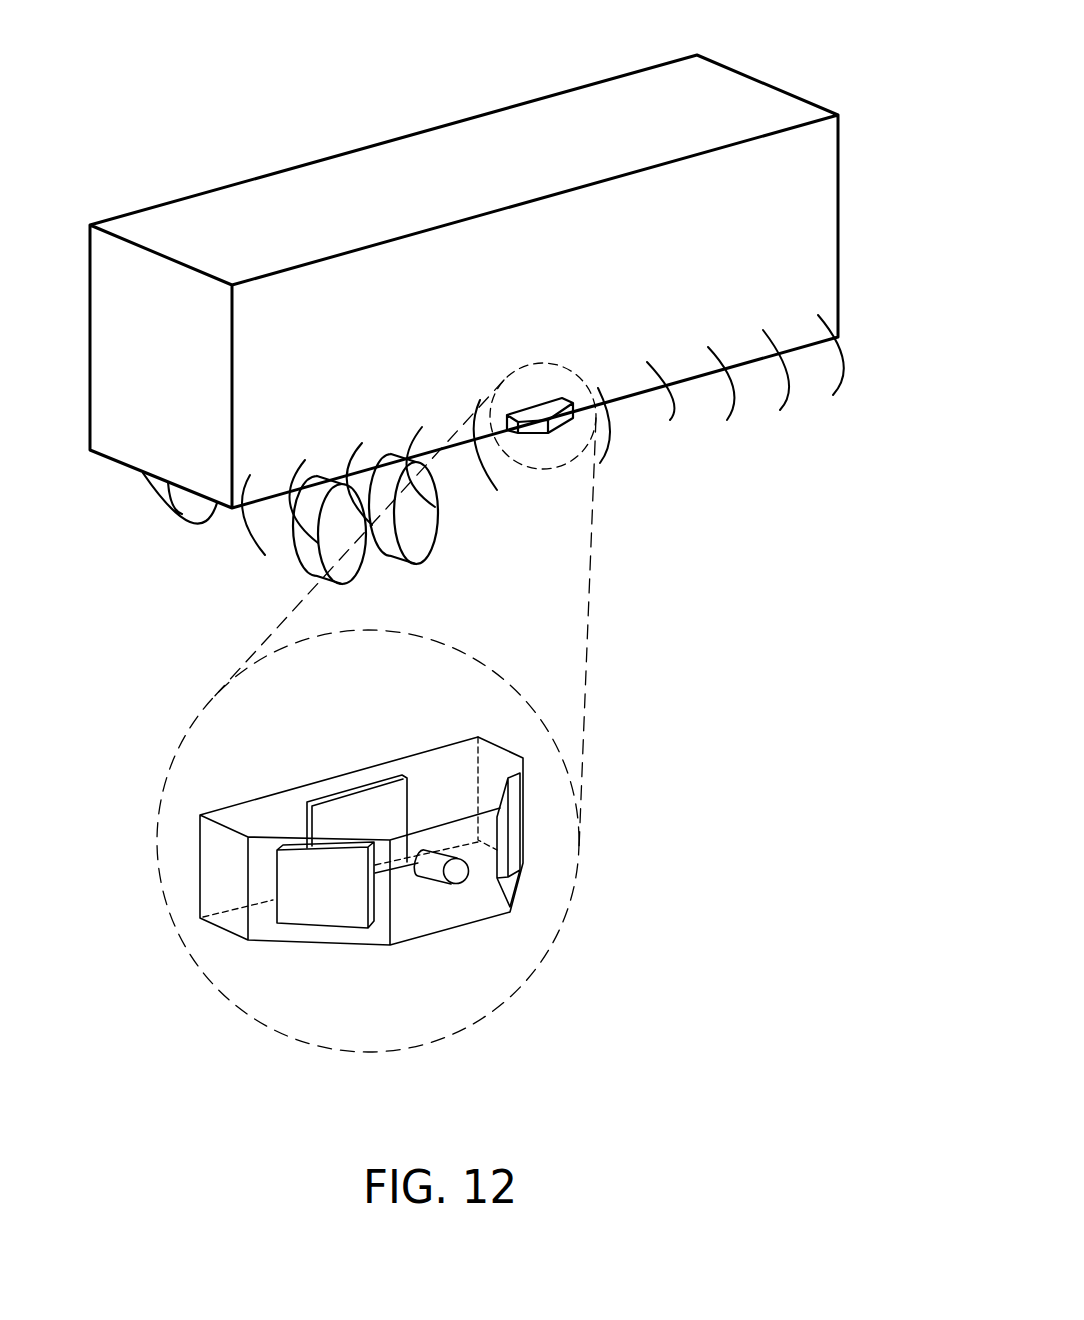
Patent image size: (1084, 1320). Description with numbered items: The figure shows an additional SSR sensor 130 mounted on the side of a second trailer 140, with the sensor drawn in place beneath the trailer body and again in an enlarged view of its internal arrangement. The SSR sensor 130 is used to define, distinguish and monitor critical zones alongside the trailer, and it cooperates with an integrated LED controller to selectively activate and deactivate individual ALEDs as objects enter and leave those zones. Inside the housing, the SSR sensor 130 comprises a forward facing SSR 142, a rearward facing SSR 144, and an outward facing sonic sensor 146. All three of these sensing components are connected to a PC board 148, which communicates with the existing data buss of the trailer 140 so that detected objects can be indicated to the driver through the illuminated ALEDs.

The second trailer 140 is at (861, 129).
The SSR sensor 130 is at (530, 382).
The PC board 148 is at (394, 797).
The rearward facing SSR 144 is at (317, 928).
The outward facing sonic sensor 146 is at (435, 883).
The forward facing SSR 142 is at (523, 838).